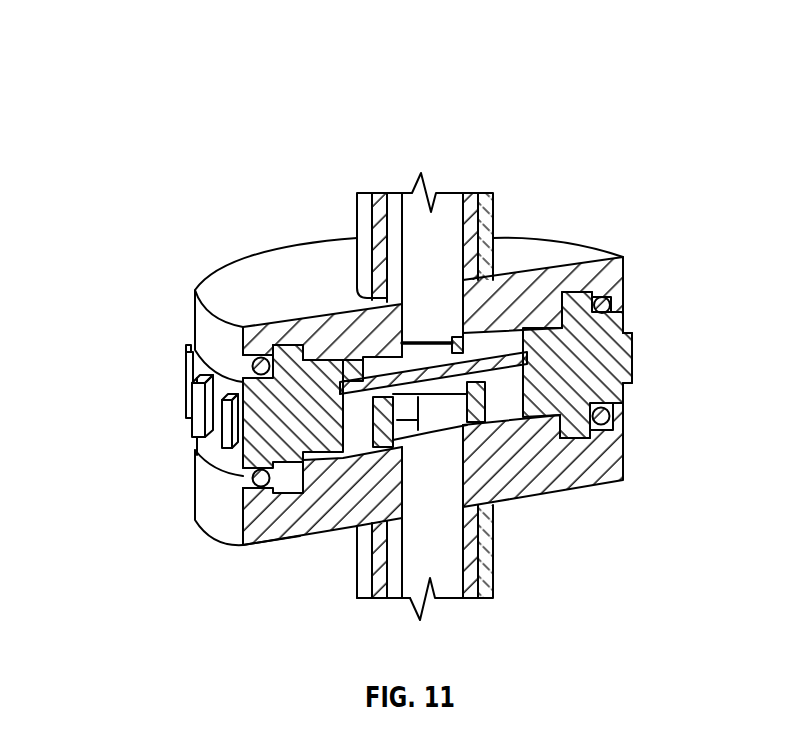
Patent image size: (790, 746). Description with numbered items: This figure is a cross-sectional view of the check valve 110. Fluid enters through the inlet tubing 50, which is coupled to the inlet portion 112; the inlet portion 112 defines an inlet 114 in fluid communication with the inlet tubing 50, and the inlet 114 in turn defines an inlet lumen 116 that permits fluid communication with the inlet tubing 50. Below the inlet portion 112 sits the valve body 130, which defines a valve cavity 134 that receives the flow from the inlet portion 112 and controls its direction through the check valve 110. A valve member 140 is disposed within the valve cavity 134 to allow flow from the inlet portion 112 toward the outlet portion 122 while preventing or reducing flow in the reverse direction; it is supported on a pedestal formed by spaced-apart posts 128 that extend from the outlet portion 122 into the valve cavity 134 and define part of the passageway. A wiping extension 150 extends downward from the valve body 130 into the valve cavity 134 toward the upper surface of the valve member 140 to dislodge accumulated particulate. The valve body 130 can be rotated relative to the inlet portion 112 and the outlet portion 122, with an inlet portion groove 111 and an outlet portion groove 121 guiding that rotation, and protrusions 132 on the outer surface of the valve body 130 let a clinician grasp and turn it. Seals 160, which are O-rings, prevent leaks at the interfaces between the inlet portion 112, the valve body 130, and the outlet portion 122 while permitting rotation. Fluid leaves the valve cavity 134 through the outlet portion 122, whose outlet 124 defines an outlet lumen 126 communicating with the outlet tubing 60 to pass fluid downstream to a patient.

The check valve 110 is at (121, 63).
The inlet portion groove 111 is at (281, 340).
The inlet portion 112 is at (277, 265).
The inlet 114 is at (395, 210).
The inlet lumen 116 is at (442, 208).
The inlet tubing 50 is at (487, 220).
The valve body 130 is at (620, 370).
The valve cavity 134 is at (498, 407).
The seals 160 is at (610, 307).
The protrusions 132 is at (197, 408).
The valve member 140 is at (353, 362).
The wiping extension 150 is at (458, 342).
The posts 128 is at (410, 420).
The outlet portion 122 is at (595, 490).
The outlet portion groove 121 is at (293, 493).
The outlet tubing 60 is at (475, 570).
The outlet 124 is at (475, 533).
The outlet lumen 126 is at (411, 597).